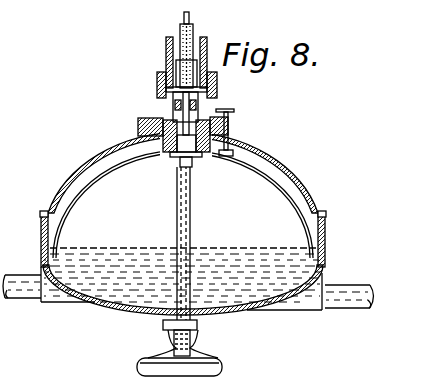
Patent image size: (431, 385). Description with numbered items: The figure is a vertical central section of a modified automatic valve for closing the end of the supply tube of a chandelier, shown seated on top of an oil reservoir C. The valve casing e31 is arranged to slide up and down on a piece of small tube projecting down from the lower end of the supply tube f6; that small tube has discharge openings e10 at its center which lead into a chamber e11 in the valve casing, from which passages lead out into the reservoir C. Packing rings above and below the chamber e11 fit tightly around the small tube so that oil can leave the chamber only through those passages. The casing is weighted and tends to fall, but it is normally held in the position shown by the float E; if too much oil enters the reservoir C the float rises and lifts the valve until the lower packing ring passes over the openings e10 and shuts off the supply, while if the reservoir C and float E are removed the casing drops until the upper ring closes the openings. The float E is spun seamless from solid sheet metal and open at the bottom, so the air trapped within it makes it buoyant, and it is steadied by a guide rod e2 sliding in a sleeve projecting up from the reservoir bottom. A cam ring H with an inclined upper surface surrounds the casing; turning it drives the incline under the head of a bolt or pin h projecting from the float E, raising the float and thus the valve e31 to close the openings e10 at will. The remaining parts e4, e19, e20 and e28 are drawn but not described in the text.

The reservoir C is at (183, 223).
The float E is at (183, 204).
The guide rod e2 is at (188, 209).
The cylinder wall e4 is at (164, 100).
The discharge openings e10 is at (172, 140).
The chamber e11 is at (202, 80).
The collar e19 is at (205, 97).
The plate e20 is at (203, 113).
The sleeve e28 is at (177, 75).
The valve casing e31 is at (166, 118).
The tube f6 is at (184, 66).
The cam ring H is at (230, 117).
The bolt or pin h is at (233, 116).